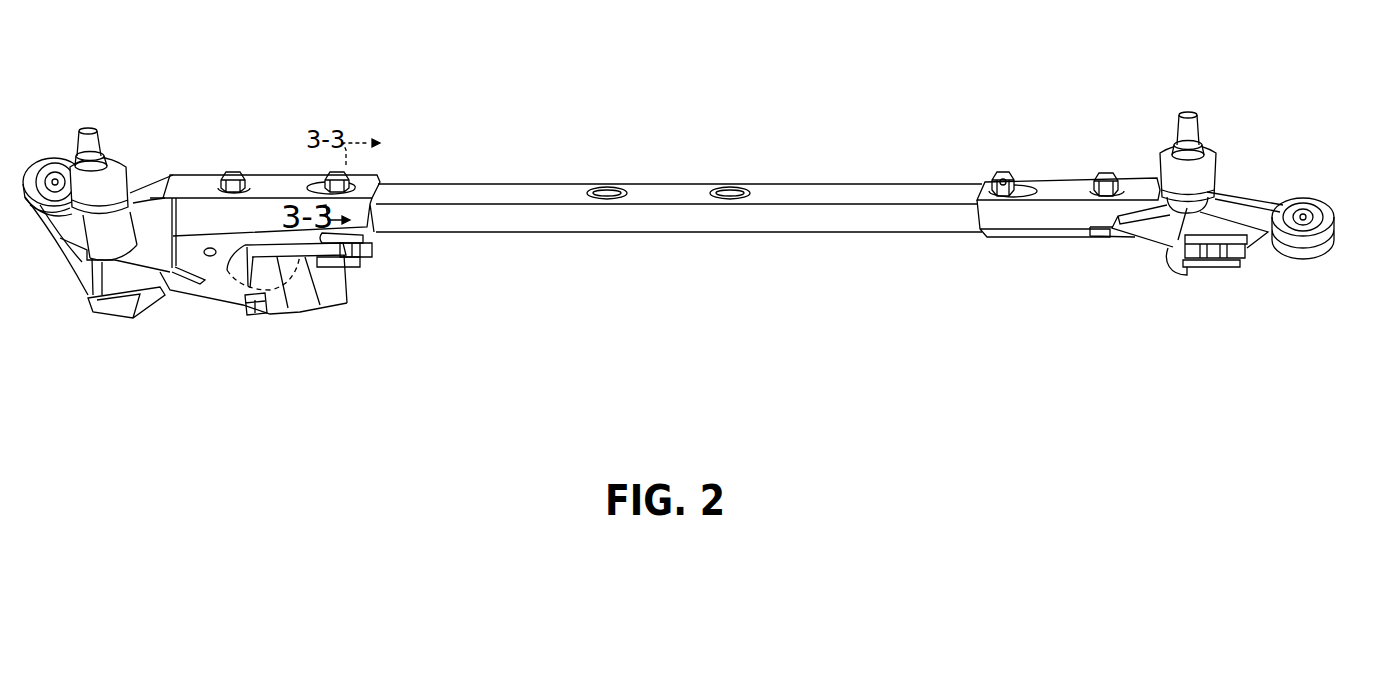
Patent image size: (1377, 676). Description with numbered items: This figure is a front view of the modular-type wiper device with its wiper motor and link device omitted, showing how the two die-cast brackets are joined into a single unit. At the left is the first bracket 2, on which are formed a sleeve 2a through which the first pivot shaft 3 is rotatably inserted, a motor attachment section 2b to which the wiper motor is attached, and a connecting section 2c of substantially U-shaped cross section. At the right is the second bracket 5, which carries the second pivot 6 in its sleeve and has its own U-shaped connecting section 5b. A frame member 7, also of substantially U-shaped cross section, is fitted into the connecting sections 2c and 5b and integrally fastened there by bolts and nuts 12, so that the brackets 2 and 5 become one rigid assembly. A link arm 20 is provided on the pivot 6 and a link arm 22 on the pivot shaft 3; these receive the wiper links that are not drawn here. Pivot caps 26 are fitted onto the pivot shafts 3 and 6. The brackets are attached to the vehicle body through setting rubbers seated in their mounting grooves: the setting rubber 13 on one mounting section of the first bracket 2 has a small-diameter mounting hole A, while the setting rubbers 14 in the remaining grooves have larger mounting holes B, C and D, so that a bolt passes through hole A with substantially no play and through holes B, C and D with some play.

The first bracket 2 is at (203, 322).
The sleeve 2a is at (100, 232).
The motor attachment section 2b is at (213, 270).
The connecting section 2c is at (282, 186).
The first pivot shaft 3 is at (92, 130).
The second bracket 5 is at (1172, 285).
The connecting section 5b is at (1067, 190).
The second pivot 6 is at (1185, 112).
The frame member 7 is at (567, 184).
The bolts and nuts 12 is at (1003, 178).
The setting rubber 13 is at (332, 262).
The setting rubbers 14 is at (55, 183).
The link arm 20 is at (1173, 267).
The link arm 22 is at (128, 313).
The pivot caps 26 is at (115, 188).
The mounting hole A is at (357, 268).
The mounting hole B is at (57, 183).
The mounting hole C is at (1208, 255).
The mounting hole D is at (1301, 215).